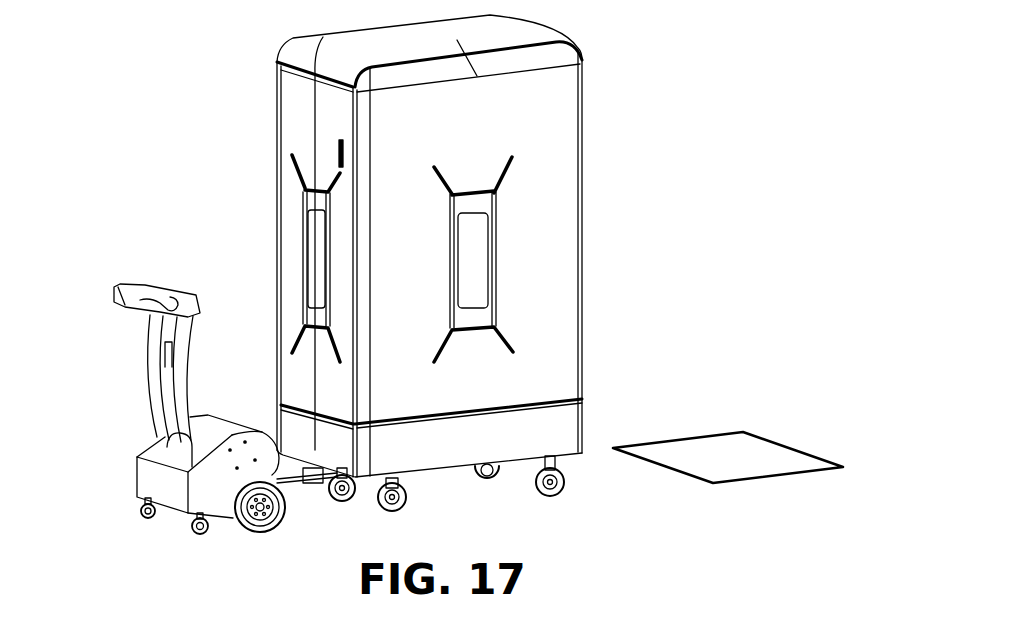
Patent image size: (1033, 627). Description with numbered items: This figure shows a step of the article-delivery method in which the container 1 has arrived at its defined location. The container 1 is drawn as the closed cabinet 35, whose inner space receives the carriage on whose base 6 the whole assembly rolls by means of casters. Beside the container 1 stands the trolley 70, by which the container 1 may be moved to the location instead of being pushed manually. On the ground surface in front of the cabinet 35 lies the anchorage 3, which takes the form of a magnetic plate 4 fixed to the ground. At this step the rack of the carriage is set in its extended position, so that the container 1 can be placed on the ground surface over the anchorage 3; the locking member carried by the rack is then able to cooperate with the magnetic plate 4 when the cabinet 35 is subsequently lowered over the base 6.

The container 1 is at (701, 81).
The cabinet 35 is at (611, 211).
The base 6 is at (500, 492).
The trolley 70 is at (133, 422).
The anchorage 3 is at (800, 429).
The magnetic plate 4 is at (703, 450).